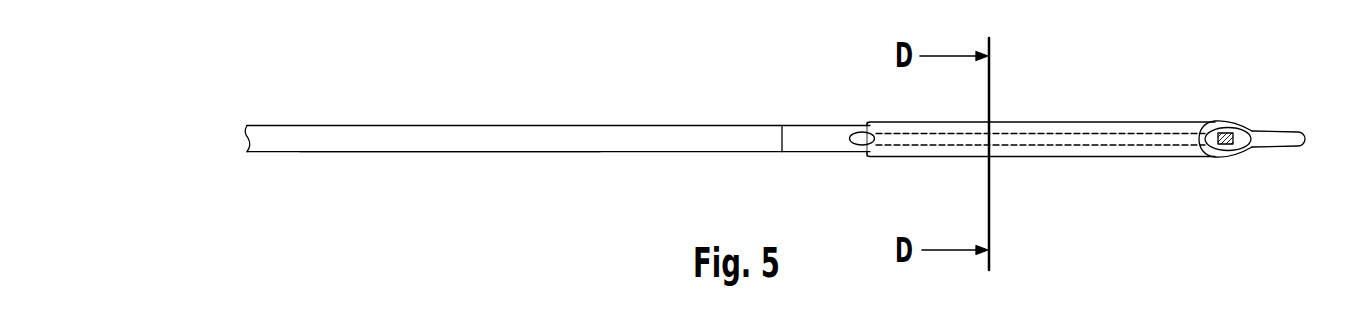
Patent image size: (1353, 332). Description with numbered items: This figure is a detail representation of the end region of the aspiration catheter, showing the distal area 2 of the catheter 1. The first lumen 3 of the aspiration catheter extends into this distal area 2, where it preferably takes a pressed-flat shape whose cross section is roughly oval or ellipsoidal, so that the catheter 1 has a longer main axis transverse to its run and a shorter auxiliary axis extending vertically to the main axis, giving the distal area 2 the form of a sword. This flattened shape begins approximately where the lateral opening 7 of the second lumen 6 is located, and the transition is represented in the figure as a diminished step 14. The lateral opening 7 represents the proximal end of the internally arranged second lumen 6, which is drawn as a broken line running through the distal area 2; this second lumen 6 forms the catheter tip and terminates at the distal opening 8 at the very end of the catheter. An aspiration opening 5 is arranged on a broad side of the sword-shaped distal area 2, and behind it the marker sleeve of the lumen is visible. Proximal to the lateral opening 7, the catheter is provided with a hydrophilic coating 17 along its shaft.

The catheter 1 is at (649, 192).
The distal area 2 is at (1058, 158).
The first lumen 3 is at (499, 125).
The aspiration opening 5 is at (1215, 157).
The second lumen 6 is at (1030, 133).
The lateral opening 7 is at (858, 147).
The distal opening 8 is at (1305, 145).
The diminished step 14 is at (867, 122).
The hydrophilic coating 17 is at (458, 152).